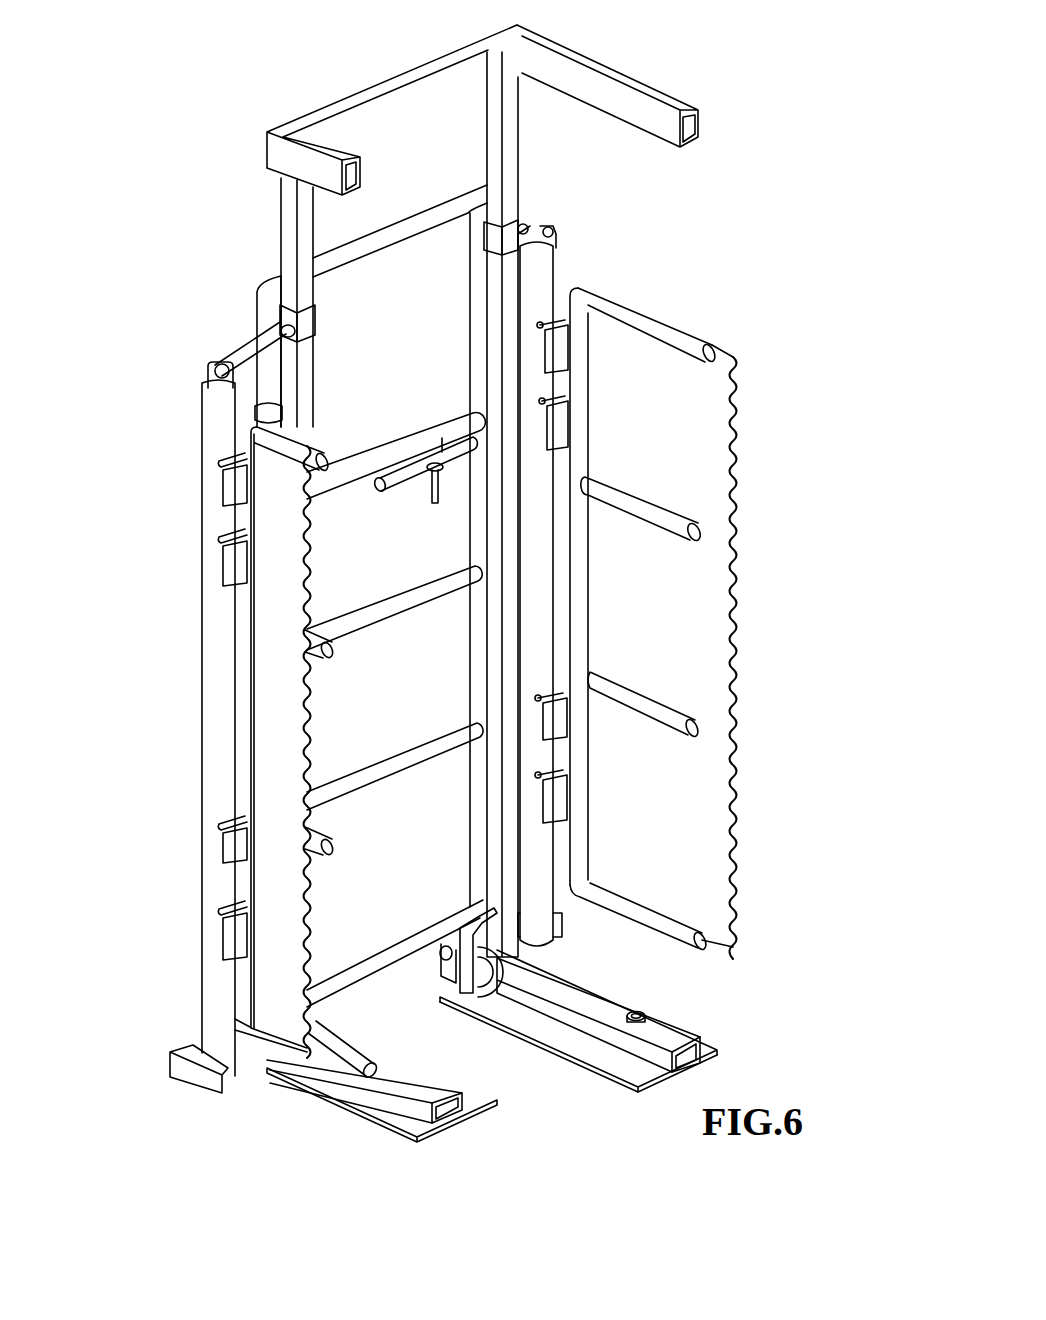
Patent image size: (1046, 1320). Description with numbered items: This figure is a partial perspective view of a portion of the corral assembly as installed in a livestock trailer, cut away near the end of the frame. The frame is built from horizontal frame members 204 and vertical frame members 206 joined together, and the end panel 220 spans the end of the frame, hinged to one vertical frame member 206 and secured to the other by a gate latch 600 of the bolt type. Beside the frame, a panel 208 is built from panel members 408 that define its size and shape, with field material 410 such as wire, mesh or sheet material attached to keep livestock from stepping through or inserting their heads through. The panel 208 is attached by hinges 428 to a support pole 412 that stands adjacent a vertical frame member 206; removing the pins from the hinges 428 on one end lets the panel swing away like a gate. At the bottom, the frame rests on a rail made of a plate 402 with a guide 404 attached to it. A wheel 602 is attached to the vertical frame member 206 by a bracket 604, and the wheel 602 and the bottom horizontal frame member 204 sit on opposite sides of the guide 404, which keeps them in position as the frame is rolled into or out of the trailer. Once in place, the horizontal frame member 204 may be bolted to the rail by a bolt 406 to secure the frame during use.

The horizontal frame member 204 is at (698, 1034).
The vertical frame member 206 is at (472, 147).
The panel 208 is at (693, 603).
The end panel 220 is at (243, 298).
The plate 402 is at (615, 1088).
The guide 404 is at (651, 1078).
The bolt 406 is at (658, 1000).
The panel member 408 is at (698, 333).
The field material 410 is at (752, 476).
The support pole 412 is at (562, 269).
The hinge 428 is at (230, 529).
The gate latch 600 is at (410, 485).
The wheel 602 is at (472, 1008).
The bracket 604 is at (333, 985).